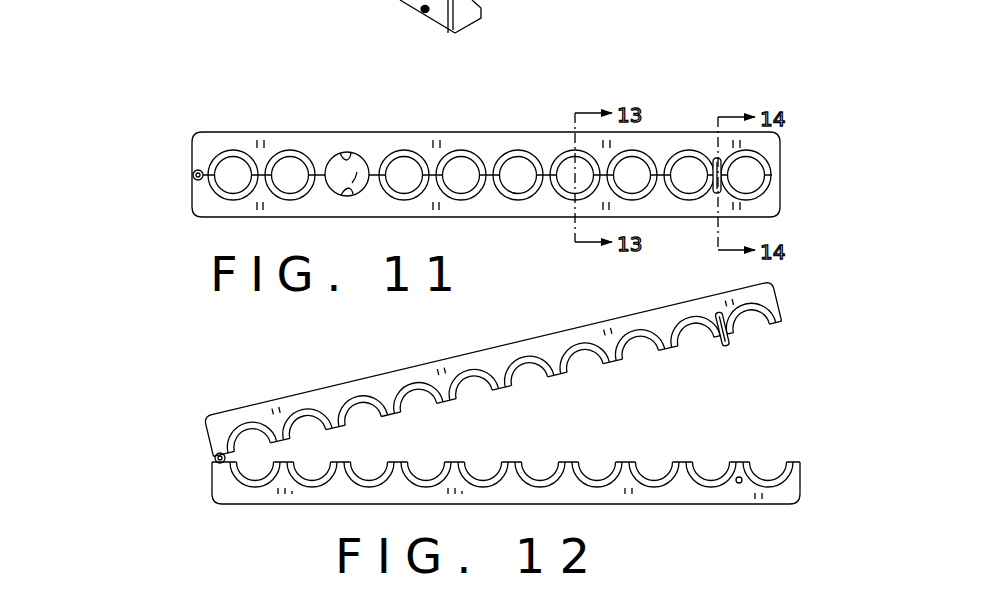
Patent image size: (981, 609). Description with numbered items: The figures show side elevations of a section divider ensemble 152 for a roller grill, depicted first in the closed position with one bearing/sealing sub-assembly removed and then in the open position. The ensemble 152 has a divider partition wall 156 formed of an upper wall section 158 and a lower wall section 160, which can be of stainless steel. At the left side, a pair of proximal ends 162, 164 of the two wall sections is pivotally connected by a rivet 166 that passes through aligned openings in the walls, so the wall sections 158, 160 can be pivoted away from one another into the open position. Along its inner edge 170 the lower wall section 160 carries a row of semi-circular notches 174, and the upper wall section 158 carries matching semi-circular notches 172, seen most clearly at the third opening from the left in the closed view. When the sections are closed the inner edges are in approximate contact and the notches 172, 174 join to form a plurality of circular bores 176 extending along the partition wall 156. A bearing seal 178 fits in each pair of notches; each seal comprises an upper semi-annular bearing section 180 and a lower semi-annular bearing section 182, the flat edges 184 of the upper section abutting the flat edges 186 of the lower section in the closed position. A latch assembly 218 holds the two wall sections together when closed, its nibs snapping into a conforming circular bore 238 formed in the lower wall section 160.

In FIG. 11, the ensemble 152 is at (198, 105).
In FIG. 12, the ensemble 152 is at (125, 483).
In FIG. 11, the divider partition wall 156 is at (256, 118).
In FIG. 12, the divider partition wall 156 is at (297, 378).
In FIG. 11, the upper wall section 158 is at (490, 145).
In FIG. 12, the upper wall section 158 is at (494, 374).
In FIG. 11, the lower wall section 160 is at (495, 210).
In FIG. 12, the lower wall section 160 is at (506, 480).
In FIG. 11, the proximal end 162 is at (191, 142).
In FIG. 12, the proximal end 162 is at (209, 436).
In FIG. 11, the proximal end 164 is at (191, 195).
In FIG. 12, the proximal end 164 is at (211, 485).
In FIG. 11, the rivet 166 is at (191, 174).
In FIG. 12, the rivet 166 is at (214, 455).
In FIG. 12, the inner edge 170 is at (628, 462).
In FIG. 11, the semi-circular notch 172 is at (345, 153).
In FIG. 11, the semi-circular notch 174 is at (347, 196).
In FIG. 11, the circular bore 176 is at (355, 180).
In FIG. 11, the bearing seal 178 is at (522, 150).
In FIG. 11, the upper semi-annular bearing section 180 is at (645, 160).
In FIG. 11, the lower semi-annular bearing section 182 is at (640, 205).
In FIG. 12, the lower semi-annular bearing section 182 is at (545, 478).
In FIG. 12, the flat edge 184 is at (398, 417).
In FIG. 12, the flat edge 186 is at (335, 458).
In FIG. 11, the latch assembly 218 is at (733, 158).
In FIG. 12, the circular bore 238 is at (740, 484).